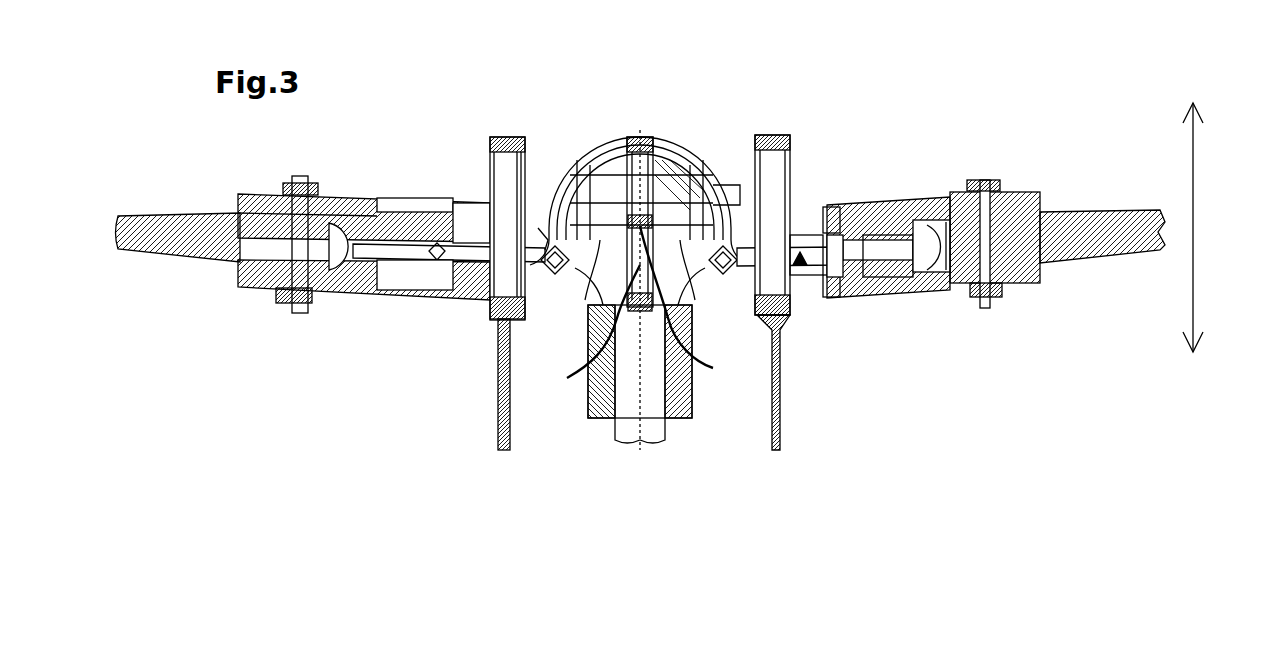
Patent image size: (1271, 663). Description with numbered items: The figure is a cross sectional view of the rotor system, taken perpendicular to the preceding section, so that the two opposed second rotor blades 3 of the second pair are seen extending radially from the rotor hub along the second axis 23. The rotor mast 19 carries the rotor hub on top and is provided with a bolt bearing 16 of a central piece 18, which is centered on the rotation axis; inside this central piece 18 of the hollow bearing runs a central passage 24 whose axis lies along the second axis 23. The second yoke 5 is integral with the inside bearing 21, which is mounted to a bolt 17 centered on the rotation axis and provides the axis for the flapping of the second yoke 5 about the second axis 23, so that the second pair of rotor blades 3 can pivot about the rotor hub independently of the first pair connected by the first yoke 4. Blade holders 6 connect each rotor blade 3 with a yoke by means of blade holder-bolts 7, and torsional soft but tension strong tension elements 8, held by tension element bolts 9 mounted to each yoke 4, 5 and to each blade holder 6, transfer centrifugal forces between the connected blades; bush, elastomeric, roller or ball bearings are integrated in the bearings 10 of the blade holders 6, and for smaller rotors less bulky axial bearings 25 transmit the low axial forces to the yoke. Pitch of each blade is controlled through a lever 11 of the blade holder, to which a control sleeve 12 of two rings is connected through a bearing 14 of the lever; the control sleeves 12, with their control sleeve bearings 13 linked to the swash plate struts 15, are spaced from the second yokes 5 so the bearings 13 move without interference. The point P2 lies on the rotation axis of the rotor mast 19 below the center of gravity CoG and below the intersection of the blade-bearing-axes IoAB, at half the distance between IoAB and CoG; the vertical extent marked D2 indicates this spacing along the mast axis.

The second rotor blades 3 is at (165, 228).
The first yoke 4 is at (642, 130).
The second yoke 5 is at (695, 290).
The blade holders 6 is at (890, 212).
The blade holder-bolts 7 is at (988, 180).
The tension elements 8 is at (432, 236).
The tension element bolts 9 is at (847, 298).
The bearings of the blade holders 10 is at (377, 236).
The lever of the blade holder 11 is at (470, 223).
The control sleeve 12 is at (497, 137).
The control sleeve bearings 13 is at (490, 306).
The bearing of the lever of the blade holder 14 is at (752, 150).
The swash plate struts 15 is at (498, 412).
The bolt bearing 16 is at (655, 140).
The bolt 17 is at (598, 178).
The central piece 18 is at (618, 150).
The rotor mast 19 is at (660, 393).
The inside bearing 21 is at (608, 288).
The second axis 23 is at (538, 228).
The central passage 24 is at (717, 200).
The axial bearings 25 is at (917, 290).
The Position 2 P2 is at (800, 268).
The center of gravity CoG is at (699, 307).
The intersection of bearing-axes of a rotor blade IoAB is at (580, 331).
The distance D2 is at (1213, 227).